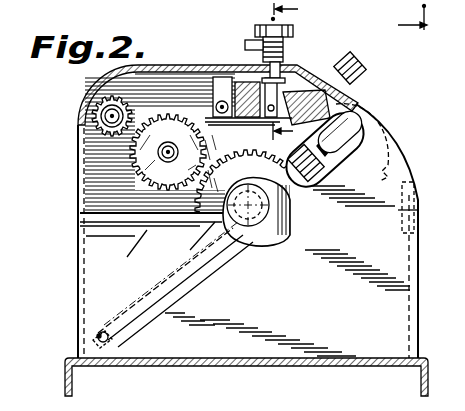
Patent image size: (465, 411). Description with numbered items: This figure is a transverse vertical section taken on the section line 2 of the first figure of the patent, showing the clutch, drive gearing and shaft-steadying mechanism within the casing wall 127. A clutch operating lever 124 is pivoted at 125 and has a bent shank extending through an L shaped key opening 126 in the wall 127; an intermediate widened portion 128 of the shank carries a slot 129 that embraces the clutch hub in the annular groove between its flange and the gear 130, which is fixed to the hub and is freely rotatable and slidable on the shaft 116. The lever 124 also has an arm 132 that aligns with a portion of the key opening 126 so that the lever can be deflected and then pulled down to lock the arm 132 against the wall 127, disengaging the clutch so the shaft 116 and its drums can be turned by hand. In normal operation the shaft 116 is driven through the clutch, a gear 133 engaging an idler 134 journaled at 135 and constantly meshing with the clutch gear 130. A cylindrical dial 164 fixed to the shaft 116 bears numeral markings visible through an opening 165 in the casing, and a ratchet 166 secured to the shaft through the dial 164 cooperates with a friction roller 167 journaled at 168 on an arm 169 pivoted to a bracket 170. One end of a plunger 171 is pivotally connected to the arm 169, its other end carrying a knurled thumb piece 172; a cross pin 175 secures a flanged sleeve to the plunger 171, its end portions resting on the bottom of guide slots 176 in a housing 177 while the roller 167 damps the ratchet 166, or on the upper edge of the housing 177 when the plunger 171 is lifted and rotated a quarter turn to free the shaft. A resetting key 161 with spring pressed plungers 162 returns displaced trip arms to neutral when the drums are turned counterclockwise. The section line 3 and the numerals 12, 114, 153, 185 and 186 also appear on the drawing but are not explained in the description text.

The instrument 12 is at (452, 10).
The section line 2- 2 is at (413, 29).
The section line 3- 3 is at (292, 72).
The housing part 114 is at (332, 5).
The casing interior 116 is at (263, 241).
The hub boss 124 is at (291, 278).
The pivot pin 125 is at (106, 328).
The lamp socket assembly 126 is at (322, 172).
The casing wall 127 is at (402, 268).
The cam plate 128 is at (242, 181).
The gear 129 is at (233, 198).
The connecting rod 130 is at (176, 253).
The lamp bulb 132 is at (328, 167).
The pinion gear 133 is at (93, 117).
The mounting plate 134 is at (136, 192).
The gear wheel 135 is at (173, 136).
The knob 153 is at (250, 43).
The bracket 161 is at (354, 62).
The terminal block 162 is at (343, 66).
The plate flange 164 is at (140, 207).
The reflector outline 165 is at (396, 140).
The base plate 166 is at (150, 233).
The housing part 167 is at (304, 4).
The housing junction 168 is at (351, 103).
The bracket 169 is at (248, 101).
The top wall 170 is at (208, 74).
The inclined wall 171 is at (300, 67).
The nut 172 is at (294, 31).
The washer 175 is at (263, 56).
The screw 176 is at (273, 30).
The lock washer 177 is at (290, 44).
The housing part 185 is at (184, 5).
The housing part 186 is at (220, 5).